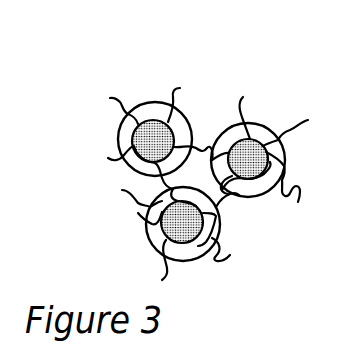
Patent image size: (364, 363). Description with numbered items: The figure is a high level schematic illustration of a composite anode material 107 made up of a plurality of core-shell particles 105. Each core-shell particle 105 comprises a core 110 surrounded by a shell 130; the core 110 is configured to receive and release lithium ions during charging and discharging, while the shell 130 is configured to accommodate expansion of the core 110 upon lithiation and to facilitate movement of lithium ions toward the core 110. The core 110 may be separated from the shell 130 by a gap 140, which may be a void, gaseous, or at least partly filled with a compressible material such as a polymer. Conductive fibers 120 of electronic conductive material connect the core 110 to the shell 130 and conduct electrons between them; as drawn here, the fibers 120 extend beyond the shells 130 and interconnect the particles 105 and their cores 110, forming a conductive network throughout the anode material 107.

The composite anode material 107 is at (75, 49).
The core 110 is at (158, 120).
The shell 130 is at (190, 124).
The conductive fibers 120 is at (107, 169).
The gap 140 is at (122, 190).
The core-shell particle 105 is at (260, 205).